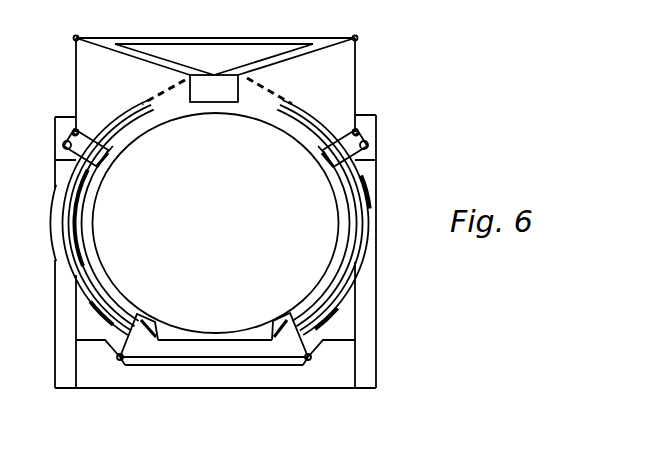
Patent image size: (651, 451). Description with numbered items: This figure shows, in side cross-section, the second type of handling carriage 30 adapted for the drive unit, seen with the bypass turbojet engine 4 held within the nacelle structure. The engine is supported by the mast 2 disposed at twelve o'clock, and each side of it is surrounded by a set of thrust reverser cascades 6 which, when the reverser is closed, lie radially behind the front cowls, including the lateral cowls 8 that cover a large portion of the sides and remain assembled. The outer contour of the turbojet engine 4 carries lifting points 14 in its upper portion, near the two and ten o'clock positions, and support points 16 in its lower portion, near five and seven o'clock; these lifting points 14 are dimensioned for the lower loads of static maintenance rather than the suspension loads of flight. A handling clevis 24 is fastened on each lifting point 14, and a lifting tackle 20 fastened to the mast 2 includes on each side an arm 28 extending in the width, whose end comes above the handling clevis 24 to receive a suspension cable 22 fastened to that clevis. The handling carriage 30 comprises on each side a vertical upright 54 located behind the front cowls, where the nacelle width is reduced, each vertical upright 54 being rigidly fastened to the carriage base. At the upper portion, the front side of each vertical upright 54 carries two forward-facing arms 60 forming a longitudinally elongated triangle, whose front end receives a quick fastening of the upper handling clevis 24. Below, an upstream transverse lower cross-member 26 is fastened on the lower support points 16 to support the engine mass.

The mast 2 is at (205, 92).
The bypass turbojet engine 4 is at (330, 258).
The thrust reverser cascades 6 is at (290, 125).
The lateral cowls 8 is at (366, 175).
The lifting points 14 is at (320, 162).
The support points 16 is at (142, 316).
The lifting tackle 20 is at (295, 37).
The suspension cable 22 is at (358, 80).
The handling clevis 24 is at (367, 143).
The lower transverse transport beam 26 is at (288, 345).
The arm 28 is at (308, 57).
The handling carriage 30 is at (343, 392).
The vertical upright 54 is at (378, 332).
The forward-facing arms 60 is at (56, 116).